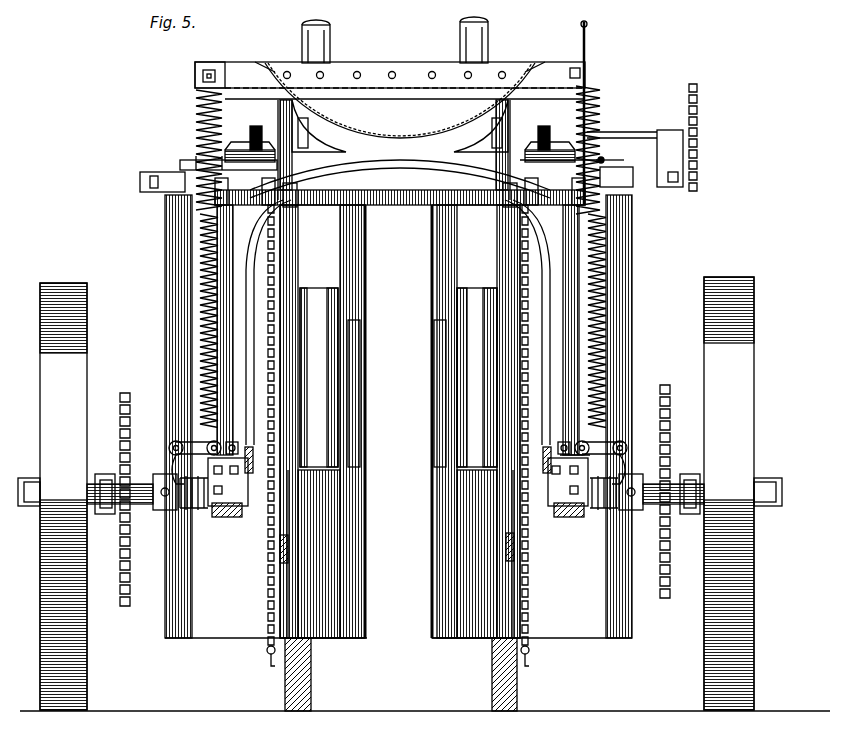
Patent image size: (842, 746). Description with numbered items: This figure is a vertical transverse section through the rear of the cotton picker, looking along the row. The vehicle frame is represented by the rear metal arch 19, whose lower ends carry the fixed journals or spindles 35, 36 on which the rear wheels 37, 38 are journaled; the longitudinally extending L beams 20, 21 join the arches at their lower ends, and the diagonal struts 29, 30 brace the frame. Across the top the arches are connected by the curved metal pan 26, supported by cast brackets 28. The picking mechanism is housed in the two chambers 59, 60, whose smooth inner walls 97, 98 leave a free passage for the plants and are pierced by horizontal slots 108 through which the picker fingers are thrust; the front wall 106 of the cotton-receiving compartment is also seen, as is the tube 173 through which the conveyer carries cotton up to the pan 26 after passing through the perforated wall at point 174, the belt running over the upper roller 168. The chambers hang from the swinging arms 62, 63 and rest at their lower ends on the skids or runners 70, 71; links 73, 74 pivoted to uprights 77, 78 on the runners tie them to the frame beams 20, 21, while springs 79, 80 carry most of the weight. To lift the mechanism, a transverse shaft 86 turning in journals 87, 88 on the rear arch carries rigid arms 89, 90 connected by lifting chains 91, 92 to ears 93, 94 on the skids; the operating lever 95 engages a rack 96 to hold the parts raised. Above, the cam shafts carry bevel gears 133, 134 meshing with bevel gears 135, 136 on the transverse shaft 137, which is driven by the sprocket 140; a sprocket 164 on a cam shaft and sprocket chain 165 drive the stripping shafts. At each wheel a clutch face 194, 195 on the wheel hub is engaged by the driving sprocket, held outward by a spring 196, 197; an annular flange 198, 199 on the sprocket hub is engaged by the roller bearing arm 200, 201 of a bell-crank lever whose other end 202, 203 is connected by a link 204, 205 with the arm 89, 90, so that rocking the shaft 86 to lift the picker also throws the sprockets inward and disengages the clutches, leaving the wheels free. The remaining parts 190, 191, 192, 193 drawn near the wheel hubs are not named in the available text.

The metal arch 19 is at (400, 179).
The longitudinally extending L beam 20 is at (236, 517).
The longitudinally extending L beam 21 is at (558, 517).
The curved metal pan 26 is at (400, 134).
The cast bracket 28 is at (343, 135).
The diagonal strut 29 is at (268, 440).
The diagonal strut 30 is at (545, 447).
The journal or spindle 35 is at (222, 508).
The journal or spindle 36 is at (575, 508).
The rear wheel 37 is at (80, 285).
The rear wheel 38 is at (725, 277).
The housing or chamber 59 is at (165, 282).
The housing or chamber 60 is at (632, 265).
The arm 62 is at (140, 190).
The arm 63 is at (672, 188).
The skid or runner 70 is at (298, 686).
The skid or runner 71 is at (509, 686).
The longitudinally extending link 73 is at (290, 548).
The longitudinally extending link 74 is at (506, 540).
The upright 77 is at (290, 596).
The upright 78 is at (513, 616).
The spring 79 is at (196, 116).
The spring 80 is at (602, 104).
The transverse shaft 86 is at (400, 206).
The journal 87 is at (300, 190).
The journal 88 is at (505, 190).
The rigid arm 89 is at (250, 250).
The rigid arm 90 is at (522, 216).
The lifting chain 91 is at (282, 478).
The lifting chain 92 is at (522, 474).
The ear 93 is at (268, 662).
The ear 94 is at (530, 662).
The operating lever 95 is at (590, 124).
The rack 96 is at (616, 177).
The inner wall 97 is at (432, 501).
The inner wall 98 is at (367, 474).
The front wall 106 is at (338, 556).
The horizontal slot 108 is at (447, 594).
The bevel gear 133 is at (238, 150).
The bevel gear 134 is at (545, 150).
The bevel gear 135 is at (256, 126).
The bevel gear 136 is at (540, 126).
The transverse shaft 137 is at (660, 130).
The sprocket 140 is at (699, 100).
The sprocket 164 is at (180, 163).
The sprocket chain 165 is at (197, 158).
The roller 168 is at (605, 158).
The tube 173 is at (340, 310).
The perforated point 174 is at (458, 298).
The chain 190 is at (128, 393).
The chain 191 is at (668, 385).
The hub 192 is at (106, 480).
The hub 193 is at (690, 480).
The clutch face 194 is at (95, 514).
The clutch face 195 is at (692, 514).
The spring 196 is at (165, 512).
The spring 197 is at (600, 512).
The annular flange 198 is at (185, 512).
The annular flange 199 is at (631, 512).
The roller bearing arm 200 is at (170, 470).
The roller bearing arm 201 is at (628, 470).
The lever end 202 is at (185, 438).
The lever end 203 is at (612, 438).
The link 204 is at (205, 326).
The link 205 is at (598, 330).